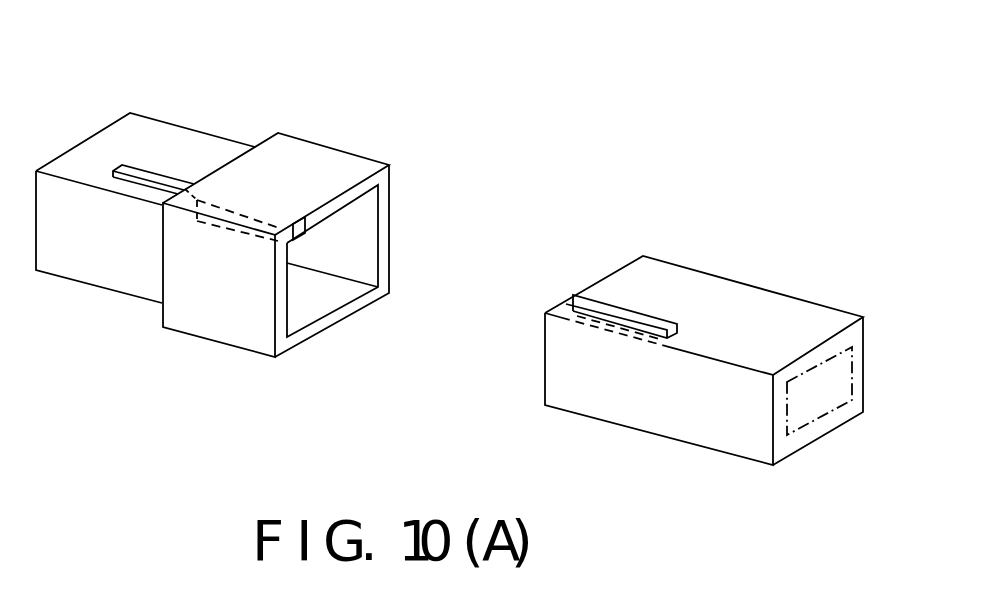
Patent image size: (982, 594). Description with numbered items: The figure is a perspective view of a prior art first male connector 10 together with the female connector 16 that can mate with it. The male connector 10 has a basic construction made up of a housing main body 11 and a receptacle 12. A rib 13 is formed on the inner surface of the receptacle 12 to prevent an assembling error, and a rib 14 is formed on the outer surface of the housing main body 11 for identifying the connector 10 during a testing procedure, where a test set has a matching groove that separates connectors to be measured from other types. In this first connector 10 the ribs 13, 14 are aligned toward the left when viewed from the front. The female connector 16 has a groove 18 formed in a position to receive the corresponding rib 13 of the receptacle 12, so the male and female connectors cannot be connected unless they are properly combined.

The first male connector 10 is at (322, 72).
The housing main body 11 is at (115, 275).
The receptacle 12 is at (245, 330).
The rib 13 is at (305, 243).
The rib 14 is at (148, 171).
The female connector 16 is at (765, 227).
The groove 18 is at (593, 303).